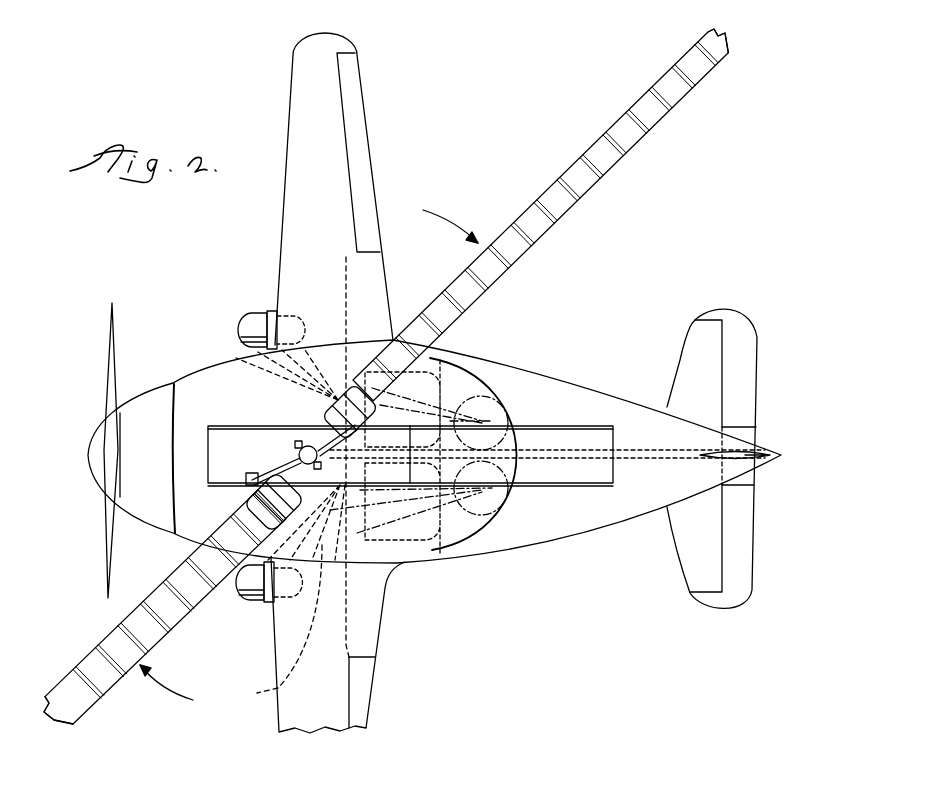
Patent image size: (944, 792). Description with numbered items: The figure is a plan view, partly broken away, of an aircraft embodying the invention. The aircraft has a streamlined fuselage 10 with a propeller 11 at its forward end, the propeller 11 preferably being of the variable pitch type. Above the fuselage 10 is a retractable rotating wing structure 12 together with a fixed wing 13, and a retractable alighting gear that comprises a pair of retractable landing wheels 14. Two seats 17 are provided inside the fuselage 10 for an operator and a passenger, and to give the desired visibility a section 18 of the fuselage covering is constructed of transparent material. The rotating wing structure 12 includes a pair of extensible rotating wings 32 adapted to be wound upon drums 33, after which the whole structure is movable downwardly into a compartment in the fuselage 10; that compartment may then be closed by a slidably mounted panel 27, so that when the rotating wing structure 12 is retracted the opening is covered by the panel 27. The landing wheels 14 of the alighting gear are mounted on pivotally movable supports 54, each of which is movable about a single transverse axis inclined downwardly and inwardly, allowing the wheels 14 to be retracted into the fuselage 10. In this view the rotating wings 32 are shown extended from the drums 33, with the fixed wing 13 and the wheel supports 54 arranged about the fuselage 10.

The fuselage 10 is at (538, 372).
The propeller 11 is at (105, 378).
The rotating wing structure 12 is at (545, 232).
The fixed wing 13 is at (276, 250).
The landing wheels 14 is at (252, 312).
The seats 17 is at (455, 355).
The transparent section 18 is at (190, 382).
The slidably mounted panel 27 is at (563, 428).
The rotating wings 32 is at (613, 125).
The drums 33 is at (327, 410).
The supports 54 is at (240, 352).